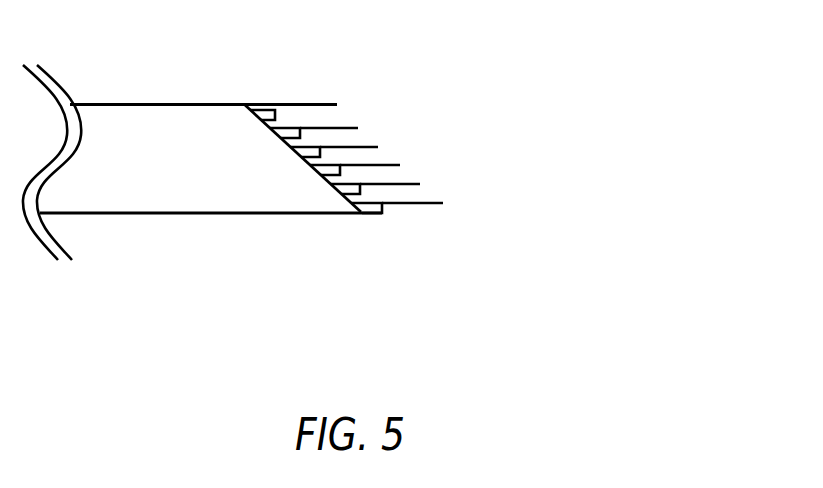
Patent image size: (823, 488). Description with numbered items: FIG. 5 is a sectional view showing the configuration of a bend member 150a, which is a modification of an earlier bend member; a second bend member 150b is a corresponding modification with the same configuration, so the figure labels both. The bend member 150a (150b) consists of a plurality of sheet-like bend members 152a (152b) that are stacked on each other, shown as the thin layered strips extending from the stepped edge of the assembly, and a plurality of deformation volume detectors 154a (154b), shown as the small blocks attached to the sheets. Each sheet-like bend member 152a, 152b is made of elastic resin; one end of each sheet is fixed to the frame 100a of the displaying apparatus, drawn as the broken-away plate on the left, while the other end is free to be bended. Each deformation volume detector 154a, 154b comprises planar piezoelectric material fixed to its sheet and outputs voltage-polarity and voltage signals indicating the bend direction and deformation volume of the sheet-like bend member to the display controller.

The frame 100a is at (122, 104).
The deformation volume detector 154a is at (360, 122).
The deformation volume detector 154b is at (284, 127).
The sheet-like bend member 152a is at (449, 136).
The sheet-like bend member 152b is at (330, 105).
The bend member 150a is at (526, 117).
The bend member 150b is at (526, 117).